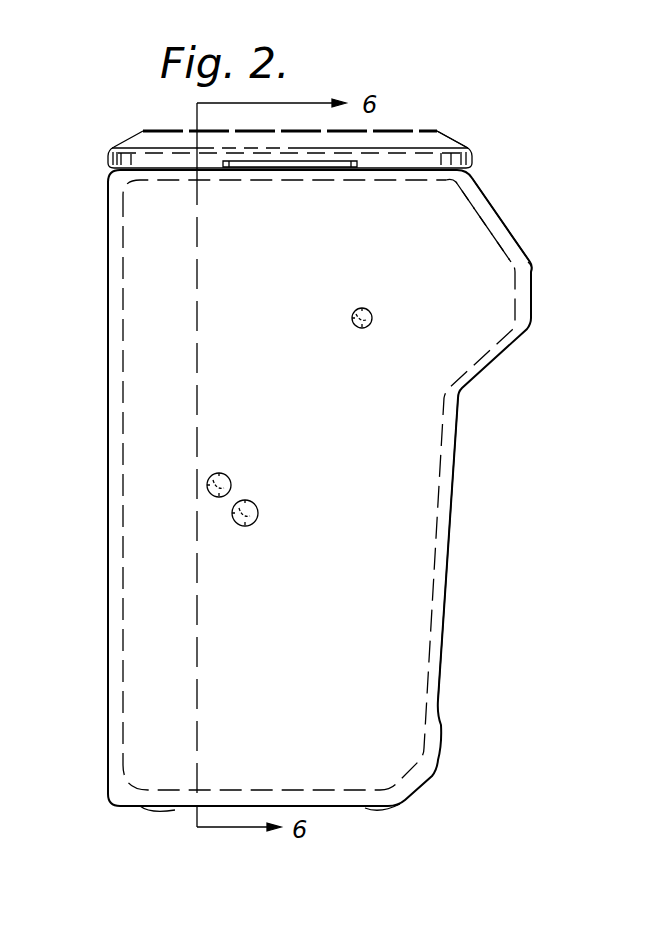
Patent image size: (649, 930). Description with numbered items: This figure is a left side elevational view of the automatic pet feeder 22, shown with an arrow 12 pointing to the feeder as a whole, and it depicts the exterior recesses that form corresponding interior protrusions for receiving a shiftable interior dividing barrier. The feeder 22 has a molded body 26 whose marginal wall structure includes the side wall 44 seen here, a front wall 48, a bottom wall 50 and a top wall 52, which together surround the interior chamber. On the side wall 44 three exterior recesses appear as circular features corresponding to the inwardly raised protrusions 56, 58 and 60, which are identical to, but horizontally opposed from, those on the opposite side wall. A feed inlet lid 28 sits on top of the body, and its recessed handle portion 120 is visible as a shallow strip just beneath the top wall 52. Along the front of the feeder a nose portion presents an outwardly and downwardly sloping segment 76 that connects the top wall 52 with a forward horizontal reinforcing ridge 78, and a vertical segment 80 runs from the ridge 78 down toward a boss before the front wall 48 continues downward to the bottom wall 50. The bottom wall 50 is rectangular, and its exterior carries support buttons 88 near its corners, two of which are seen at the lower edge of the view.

The container assembly 12 is at (80, 220).
The automatic pet feeder 22 is at (266, 488).
The molded body 26 is at (165, 354).
The feed inlet lid 28 is at (172, 137).
The recessed handle portion 120 is at (258, 170).
The top wall 52 is at (413, 165).
The outwardly and downwardly sloping segment 76 is at (492, 205).
The side wall 44 is at (456, 252).
The forward horizontal reinforcing ridge 78 is at (531, 264).
The vertical segment 80 is at (518, 305).
The front wall 48 is at (451, 534).
The bottom wall 50 is at (343, 806).
The support button 88 is at (160, 811).
The raised protrusion 56 is at (372, 325).
The raised protrusion 58 is at (226, 479).
The raised protrusion 60 is at (258, 507).